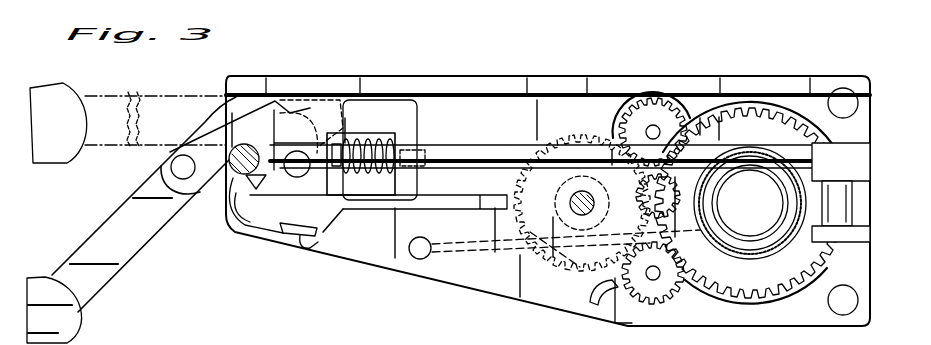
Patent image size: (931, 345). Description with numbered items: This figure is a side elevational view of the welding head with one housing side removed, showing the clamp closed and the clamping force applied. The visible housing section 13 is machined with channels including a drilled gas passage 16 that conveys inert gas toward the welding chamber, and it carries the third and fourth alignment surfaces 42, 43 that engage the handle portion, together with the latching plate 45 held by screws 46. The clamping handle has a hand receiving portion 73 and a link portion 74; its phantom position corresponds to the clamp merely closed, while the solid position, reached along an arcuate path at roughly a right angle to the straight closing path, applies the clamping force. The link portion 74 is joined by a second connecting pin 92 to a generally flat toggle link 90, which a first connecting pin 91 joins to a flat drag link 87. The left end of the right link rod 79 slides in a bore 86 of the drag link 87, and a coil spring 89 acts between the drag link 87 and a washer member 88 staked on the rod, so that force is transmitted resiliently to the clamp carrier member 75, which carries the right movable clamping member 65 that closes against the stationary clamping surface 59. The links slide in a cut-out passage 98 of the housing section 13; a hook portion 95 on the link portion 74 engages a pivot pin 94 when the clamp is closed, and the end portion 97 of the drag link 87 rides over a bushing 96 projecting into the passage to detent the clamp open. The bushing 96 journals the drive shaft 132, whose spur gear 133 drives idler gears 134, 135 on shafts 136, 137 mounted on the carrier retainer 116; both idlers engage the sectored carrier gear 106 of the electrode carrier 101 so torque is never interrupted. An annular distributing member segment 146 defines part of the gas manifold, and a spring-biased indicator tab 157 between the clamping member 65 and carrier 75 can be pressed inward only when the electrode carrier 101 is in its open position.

The housing section 13 is at (510, 80).
The gas passage 16 is at (473, 253).
The third alignment surface 42 is at (423, 210).
The fourth alignment surface 43 is at (587, 270).
The latching plate 45 is at (277, 250).
The screws 46 is at (303, 257).
The stationary clamping surface 59 is at (727, 214).
The right movable clamping member 65 is at (821, 203).
The hand receiving portion 73 is at (55, 172).
The link portion 74 is at (127, 247).
The clamp carrier member 75 is at (858, 172).
The right link rod 79 is at (467, 145).
The bore 86 is at (417, 157).
The drag link 87 is at (403, 110).
The washer member 88 is at (345, 168).
The coil spring 89 is at (370, 135).
The toggle link 90 is at (243, 128).
The first connecting pin 91 is at (297, 178).
The second connecting pin 92 is at (160, 172).
The pivot pin 94 is at (220, 185).
The hook portion 95 is at (250, 220).
The bushing 96 is at (620, 237).
The end portion 97 is at (395, 194).
The cut-out passage 98 is at (465, 96).
The electrode carrier 101 is at (800, 117).
The carrier gear 106 is at (747, 105).
The carrier retainer 116 is at (782, 100).
The drive shaft 132 is at (578, 191).
The spur gear 133 is at (578, 140).
The idler gear 134 is at (635, 97).
The idler gear 135 is at (643, 303).
The shaft 136 is at (683, 120).
The shaft 137 is at (672, 287).
The annular distributing member segment 146 is at (718, 183).
The indicator tab 157 is at (850, 210).